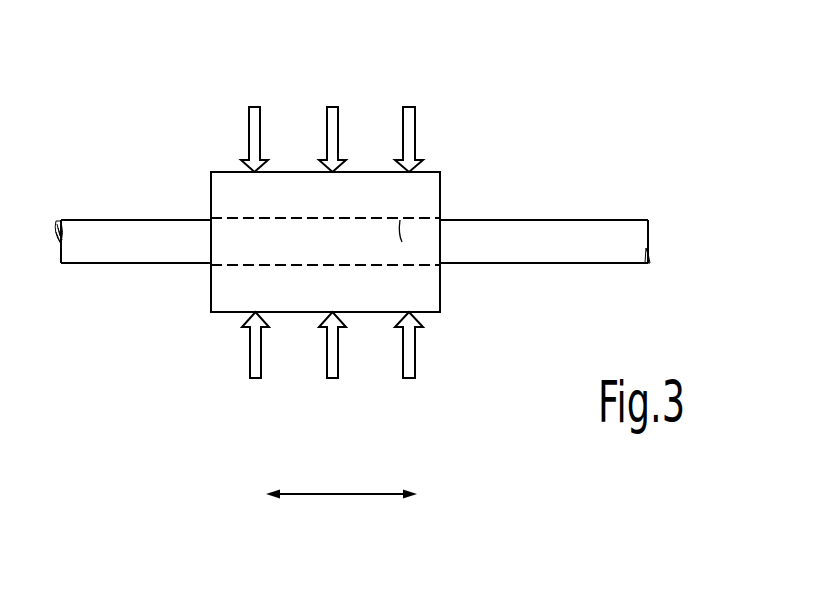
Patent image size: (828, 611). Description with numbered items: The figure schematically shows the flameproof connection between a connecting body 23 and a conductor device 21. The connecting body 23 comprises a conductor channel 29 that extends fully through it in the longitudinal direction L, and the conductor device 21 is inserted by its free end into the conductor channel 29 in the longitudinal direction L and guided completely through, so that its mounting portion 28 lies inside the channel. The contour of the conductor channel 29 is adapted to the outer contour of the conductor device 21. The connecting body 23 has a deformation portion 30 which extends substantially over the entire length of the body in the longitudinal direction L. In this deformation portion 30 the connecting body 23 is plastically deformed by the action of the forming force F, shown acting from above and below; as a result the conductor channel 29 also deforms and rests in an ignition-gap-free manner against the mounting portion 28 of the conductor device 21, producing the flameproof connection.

The conductor device 21 is at (565, 233).
The connecting body 23 is at (425, 196).
The mounting portion 28 is at (410, 257).
The conductor channel 29 is at (252, 270).
The deformation portion 30 is at (296, 120).
The forming force F is at (248, 136).
The longitudinal direction L is at (330, 495).